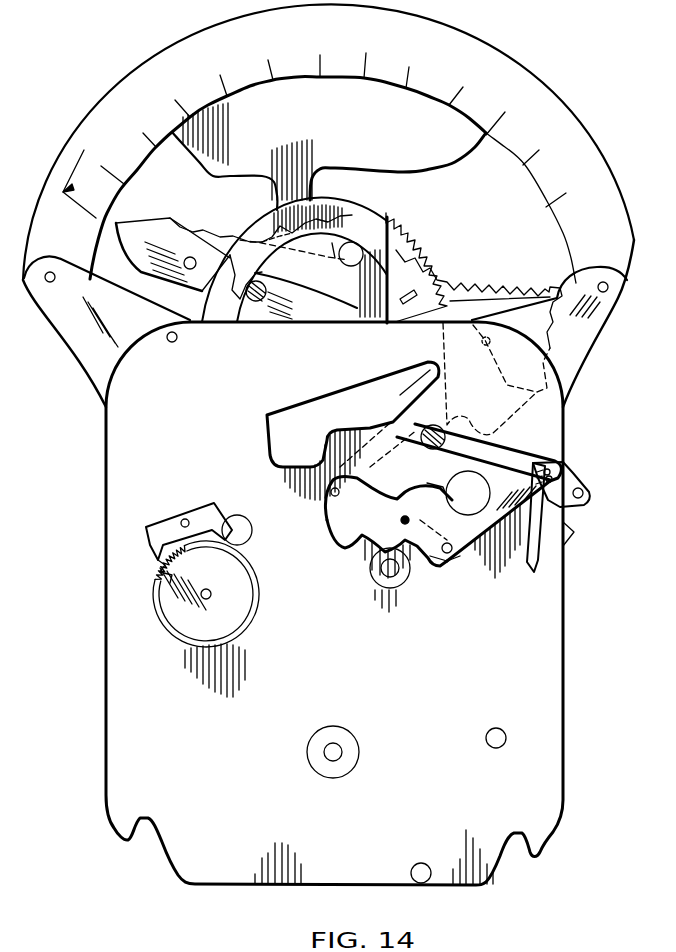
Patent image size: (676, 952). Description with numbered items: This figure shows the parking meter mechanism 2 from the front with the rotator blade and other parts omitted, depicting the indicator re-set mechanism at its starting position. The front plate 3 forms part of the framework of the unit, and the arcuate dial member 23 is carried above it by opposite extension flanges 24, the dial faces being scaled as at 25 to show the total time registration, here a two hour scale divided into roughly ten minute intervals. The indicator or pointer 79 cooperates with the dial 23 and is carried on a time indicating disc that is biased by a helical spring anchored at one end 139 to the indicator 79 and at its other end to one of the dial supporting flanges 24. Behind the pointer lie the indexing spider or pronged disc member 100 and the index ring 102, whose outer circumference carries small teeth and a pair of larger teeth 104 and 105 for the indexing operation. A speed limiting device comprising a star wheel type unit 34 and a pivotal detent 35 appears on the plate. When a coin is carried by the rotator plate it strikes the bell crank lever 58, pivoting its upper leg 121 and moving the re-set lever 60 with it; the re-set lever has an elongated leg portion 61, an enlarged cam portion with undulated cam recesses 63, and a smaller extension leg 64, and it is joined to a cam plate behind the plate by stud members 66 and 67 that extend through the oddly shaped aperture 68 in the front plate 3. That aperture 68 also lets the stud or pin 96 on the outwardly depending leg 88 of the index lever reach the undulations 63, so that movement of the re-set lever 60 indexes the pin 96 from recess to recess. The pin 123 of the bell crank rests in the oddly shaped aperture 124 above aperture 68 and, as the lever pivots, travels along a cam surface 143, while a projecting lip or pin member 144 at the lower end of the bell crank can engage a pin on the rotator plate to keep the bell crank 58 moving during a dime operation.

The parking meter mechanism 2 is at (565, 582).
The front plate 3 is at (114, 769).
The dial member 23 is at (481, 50).
The extension flanges 24 is at (73, 322).
The scale 25 is at (453, 95).
The star wheel type unit 34 is at (173, 618).
The pivotal detent 35 is at (157, 533).
The bell crank lever 58 is at (567, 463).
The re-set lever 60 is at (587, 502).
The elongated leg portion 61 is at (460, 558).
The cam recesses 63 is at (407, 490).
The smaller extension leg 64 is at (355, 508).
The stud member 66 is at (409, 518).
The stud member 67 is at (451, 544).
The oddly shaped aperture 68 is at (347, 549).
The indicator or pointer 79 is at (138, 230).
The outwardly depending leg 88 is at (420, 408).
The stud or pin 96 is at (331, 494).
The indexing spider 100 is at (305, 297).
The index ring 102 is at (396, 260).
The larger tooth 104 is at (340, 222).
The larger tooth 105 is at (203, 292).
The upper leg 121 is at (489, 447).
The pin 123 is at (430, 442).
The oddly shaped aperture 124 is at (307, 413).
The spring end 139 is at (187, 232).
The cam surface 143 is at (368, 422).
The projecting lip 144 is at (533, 572).